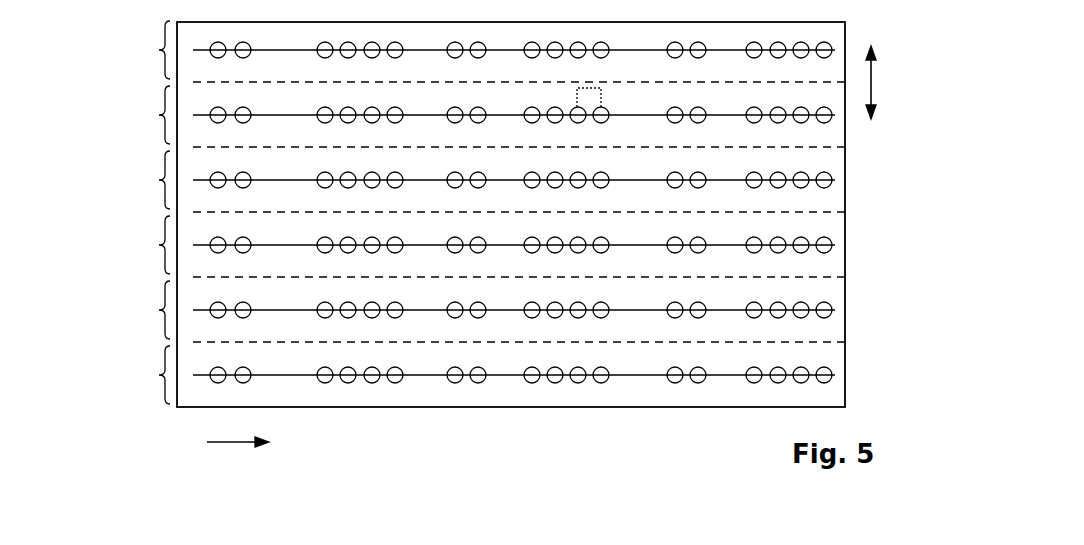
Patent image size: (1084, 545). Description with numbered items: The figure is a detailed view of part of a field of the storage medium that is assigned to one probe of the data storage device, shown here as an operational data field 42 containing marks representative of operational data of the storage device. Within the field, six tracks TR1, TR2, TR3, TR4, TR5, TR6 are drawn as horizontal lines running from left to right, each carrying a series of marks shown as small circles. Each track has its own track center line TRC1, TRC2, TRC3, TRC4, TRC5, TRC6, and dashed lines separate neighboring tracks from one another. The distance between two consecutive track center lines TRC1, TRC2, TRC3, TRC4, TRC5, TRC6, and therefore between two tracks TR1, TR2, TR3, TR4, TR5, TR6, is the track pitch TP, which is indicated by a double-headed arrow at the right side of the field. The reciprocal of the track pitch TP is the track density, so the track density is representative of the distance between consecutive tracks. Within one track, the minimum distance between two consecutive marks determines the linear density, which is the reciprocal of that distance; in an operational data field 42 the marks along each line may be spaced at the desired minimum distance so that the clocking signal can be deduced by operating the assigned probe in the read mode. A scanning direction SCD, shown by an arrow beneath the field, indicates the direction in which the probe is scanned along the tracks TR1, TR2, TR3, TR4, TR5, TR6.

The operational data field 42 is at (845, 160).
The track TR1 is at (138, 50).
The track TR2 is at (138, 115).
The track TR3 is at (138, 180).
The track TR4 is at (138, 245).
The track TR5 is at (138, 310).
The track TR6 is at (138, 375).
The track center line TRC1 is at (514, 60).
The track center line TRC2 is at (514, 116).
The track center line TRC3 is at (514, 190).
The track center line TRC4 is at (514, 255).
The track center line TRC5 is at (514, 320).
The track center line TRC6 is at (514, 385).
The track pitch TP is at (888, 82).
The scanning direction SCD is at (238, 453).